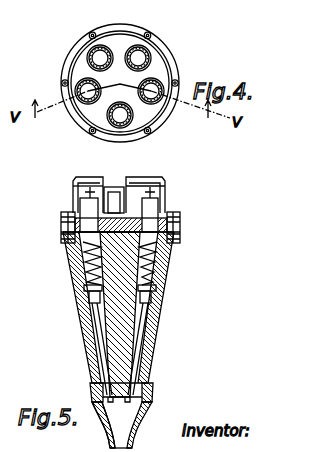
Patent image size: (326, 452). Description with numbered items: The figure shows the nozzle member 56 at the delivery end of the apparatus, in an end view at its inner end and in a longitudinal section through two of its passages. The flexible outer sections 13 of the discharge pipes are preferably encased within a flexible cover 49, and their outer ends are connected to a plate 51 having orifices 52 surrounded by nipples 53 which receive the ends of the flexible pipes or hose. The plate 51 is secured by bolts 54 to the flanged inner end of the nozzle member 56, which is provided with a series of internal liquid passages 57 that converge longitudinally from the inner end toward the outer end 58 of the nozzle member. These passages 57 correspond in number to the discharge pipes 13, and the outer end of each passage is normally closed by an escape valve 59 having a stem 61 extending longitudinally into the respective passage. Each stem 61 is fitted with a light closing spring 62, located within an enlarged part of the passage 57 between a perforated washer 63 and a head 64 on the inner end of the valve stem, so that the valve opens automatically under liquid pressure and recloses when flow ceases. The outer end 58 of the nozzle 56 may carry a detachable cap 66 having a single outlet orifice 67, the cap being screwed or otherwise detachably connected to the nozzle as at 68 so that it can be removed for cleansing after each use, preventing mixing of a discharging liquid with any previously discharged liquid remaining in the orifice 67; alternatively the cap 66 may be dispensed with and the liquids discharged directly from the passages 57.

In FIG. 5, the flexible outer sections of the discharge pipes 13 is at (112, 183).
In FIG. 4, the flexible cover 49 is at (155, 58).
In FIG. 5, the flexible cover 49 is at (75, 181).
In FIG. 4, the plate 51 is at (98, 77).
In FIG. 5, the plate 51 is at (171, 223).
In FIG. 4, the orifices 52 is at (120, 117).
In FIG. 5, the orifices 52 is at (150, 214).
In FIG. 4, the nipples 53 is at (92, 105).
In FIG. 5, the nipples 53 is at (100, 211).
In FIG. 4, the bolts 54 is at (95, 33).
In FIG. 5, the bolts 54 is at (176, 243).
In FIG. 5, the nozzle member 56 is at (137, 318).
In FIG. 5, the internal liquid passages 57 is at (100, 316).
In FIG. 5, the outer end of the nozzle member 58 is at (96, 384).
In FIG. 5, the escape valve 59 is at (106, 412).
In FIG. 5, the valve stem 61 is at (139, 351).
In FIG. 5, the light closing spring 62 is at (152, 268).
In FIG. 5, the perforated washer 63 is at (155, 294).
In FIG. 5, the head 64 is at (166, 231).
In FIG. 5, the detachable cap 66 is at (115, 430).
In FIG. 5, the outlet orifice 67 is at (133, 427).
In FIG. 5, the detachable connection 68 is at (149, 394).